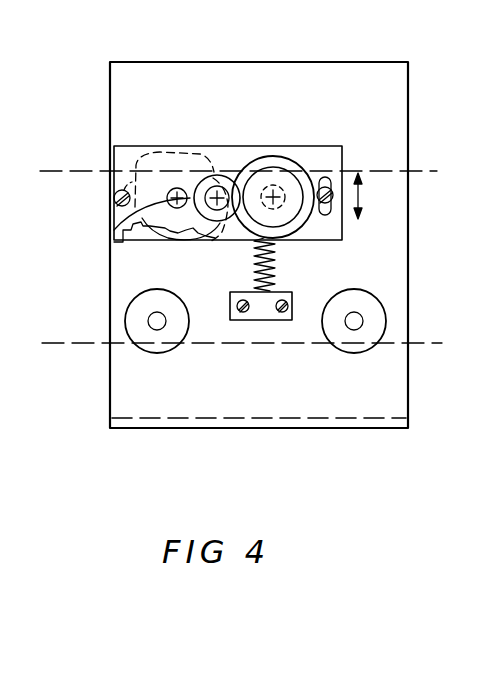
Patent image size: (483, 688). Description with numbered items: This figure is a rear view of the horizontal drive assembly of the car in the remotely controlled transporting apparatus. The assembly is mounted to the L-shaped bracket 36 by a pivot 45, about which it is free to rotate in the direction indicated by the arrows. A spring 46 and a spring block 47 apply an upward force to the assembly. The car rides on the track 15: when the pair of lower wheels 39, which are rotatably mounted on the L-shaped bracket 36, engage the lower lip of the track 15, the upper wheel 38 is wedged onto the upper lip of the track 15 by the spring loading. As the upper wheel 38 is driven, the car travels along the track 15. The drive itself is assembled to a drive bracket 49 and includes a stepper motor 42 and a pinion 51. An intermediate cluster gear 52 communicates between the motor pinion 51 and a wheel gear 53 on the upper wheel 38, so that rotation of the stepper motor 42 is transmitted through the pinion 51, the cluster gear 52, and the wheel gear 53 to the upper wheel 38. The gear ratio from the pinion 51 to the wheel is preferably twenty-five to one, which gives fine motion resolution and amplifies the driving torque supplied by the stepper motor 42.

The track 15 is at (381, 171).
The L-shaped bracket 36 is at (353, 62).
The upper wheel 38 is at (296, 156).
The lower wheels 39 is at (129, 337).
The stepper motor 42 is at (157, 235).
The pivot 45 is at (114, 198).
The spring 46 is at (277, 250).
The spring block 47 is at (230, 295).
The drive bracket 49 is at (297, 168).
The pinion 51 is at (114, 228).
The intermediate cluster gear 52 is at (220, 177).
The wheel gear 53 is at (299, 229).